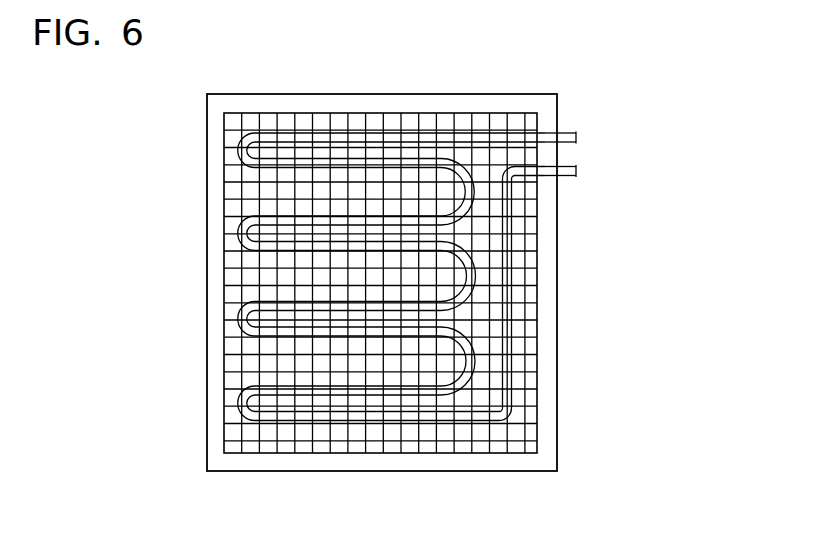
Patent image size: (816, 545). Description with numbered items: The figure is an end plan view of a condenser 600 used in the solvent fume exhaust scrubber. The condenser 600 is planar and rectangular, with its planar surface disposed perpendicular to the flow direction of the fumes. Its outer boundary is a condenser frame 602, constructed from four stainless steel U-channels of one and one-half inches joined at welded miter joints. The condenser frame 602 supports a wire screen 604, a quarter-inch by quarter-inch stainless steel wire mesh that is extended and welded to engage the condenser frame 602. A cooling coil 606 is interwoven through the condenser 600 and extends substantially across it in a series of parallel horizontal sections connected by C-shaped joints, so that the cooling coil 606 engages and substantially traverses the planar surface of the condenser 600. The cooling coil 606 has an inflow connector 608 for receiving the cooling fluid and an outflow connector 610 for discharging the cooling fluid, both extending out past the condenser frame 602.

The condenser 600 is at (420, 302).
The condenser frame 602 is at (422, 466).
The wire screen 604 is at (297, 353).
The cooling coil 606 is at (238, 142).
The inflow connector 608 is at (574, 128).
The outflow connector 610 is at (567, 173).